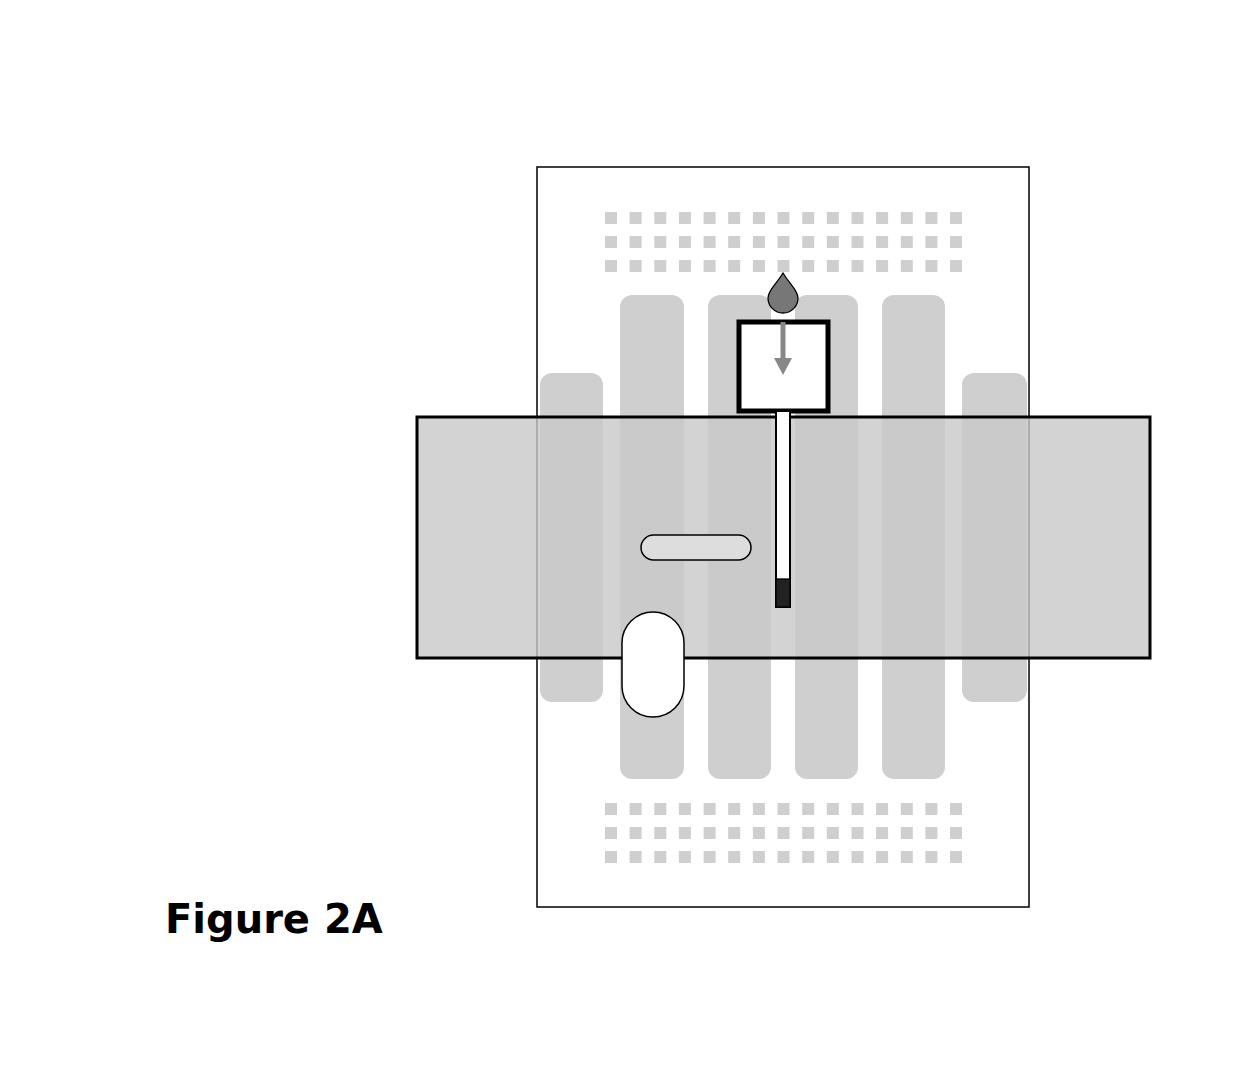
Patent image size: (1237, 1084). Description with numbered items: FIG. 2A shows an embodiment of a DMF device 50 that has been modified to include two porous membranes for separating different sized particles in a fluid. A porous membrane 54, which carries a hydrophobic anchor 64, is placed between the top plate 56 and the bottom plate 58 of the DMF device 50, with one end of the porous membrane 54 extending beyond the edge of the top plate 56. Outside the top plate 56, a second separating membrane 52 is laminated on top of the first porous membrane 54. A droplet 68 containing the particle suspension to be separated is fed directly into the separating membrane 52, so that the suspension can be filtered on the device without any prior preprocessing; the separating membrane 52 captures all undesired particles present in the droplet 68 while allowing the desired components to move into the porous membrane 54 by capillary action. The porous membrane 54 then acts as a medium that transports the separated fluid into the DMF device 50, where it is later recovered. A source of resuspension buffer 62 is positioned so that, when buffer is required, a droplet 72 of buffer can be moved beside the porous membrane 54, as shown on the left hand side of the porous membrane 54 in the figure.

The DMF device 50 is at (563, 130).
The separating membrane 52 is at (726, 365).
The porous membrane 54 is at (805, 483).
The top plate 56 is at (1127, 583).
The bottom plate 58 is at (571, 793).
The source of resuspension buffer 62 is at (601, 635).
The hydrophobic anchor 64 is at (807, 606).
The droplet 68 is at (807, 292).
The droplet 72 is at (683, 540).